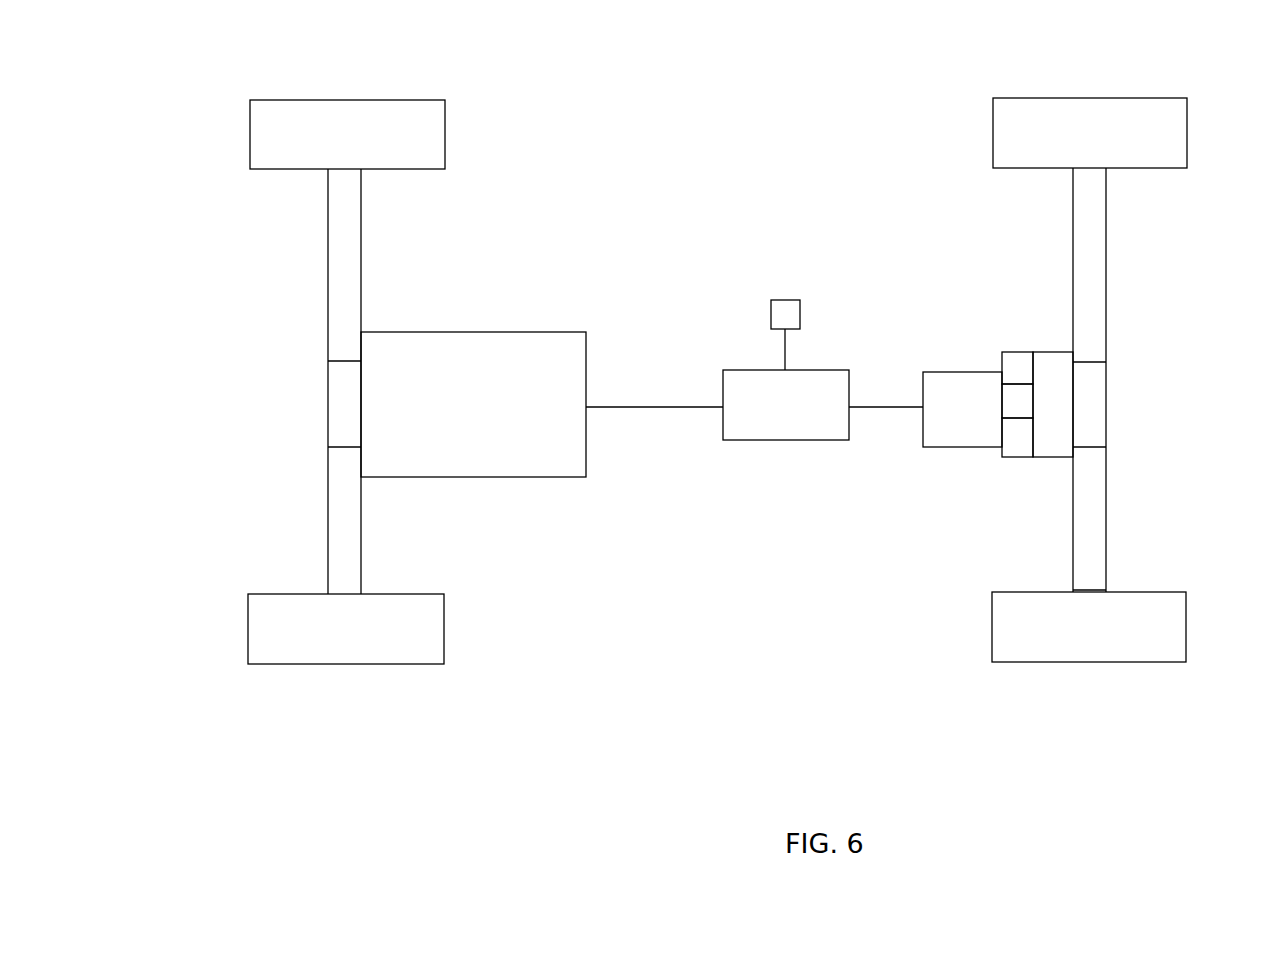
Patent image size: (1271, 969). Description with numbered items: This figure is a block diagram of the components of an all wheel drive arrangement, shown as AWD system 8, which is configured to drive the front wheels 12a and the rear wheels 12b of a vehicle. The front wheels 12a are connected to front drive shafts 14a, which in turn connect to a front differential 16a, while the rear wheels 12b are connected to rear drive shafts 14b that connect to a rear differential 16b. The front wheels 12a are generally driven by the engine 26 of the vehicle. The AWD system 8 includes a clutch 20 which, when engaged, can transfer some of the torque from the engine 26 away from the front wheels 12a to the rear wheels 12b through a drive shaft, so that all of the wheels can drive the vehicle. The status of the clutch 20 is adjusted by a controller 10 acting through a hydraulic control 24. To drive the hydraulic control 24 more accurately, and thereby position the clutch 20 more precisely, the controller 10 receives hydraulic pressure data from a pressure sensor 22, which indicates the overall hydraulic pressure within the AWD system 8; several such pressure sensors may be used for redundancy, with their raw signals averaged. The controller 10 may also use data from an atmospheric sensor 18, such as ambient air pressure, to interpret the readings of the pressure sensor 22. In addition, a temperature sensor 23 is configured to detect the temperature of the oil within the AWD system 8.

The AWD system 8 is at (1134, 60).
The controller 10 is at (815, 390).
The front wheels 12a is at (430, 132).
The rear wheels 12b is at (1172, 132).
The front drive shafts 14a is at (350, 227).
The rear drive shafts 14b is at (1093, 258).
The front differential 16a is at (343, 410).
The rear differential 16b is at (1088, 405).
The atmospheric sensor 18 is at (788, 315).
The clutch 20 is at (1057, 370).
The pressure sensor 22 is at (1018, 367).
The temperature sensor 23 is at (1012, 410).
The hydraulic control 24 is at (1020, 435).
The engine 26 is at (523, 350).